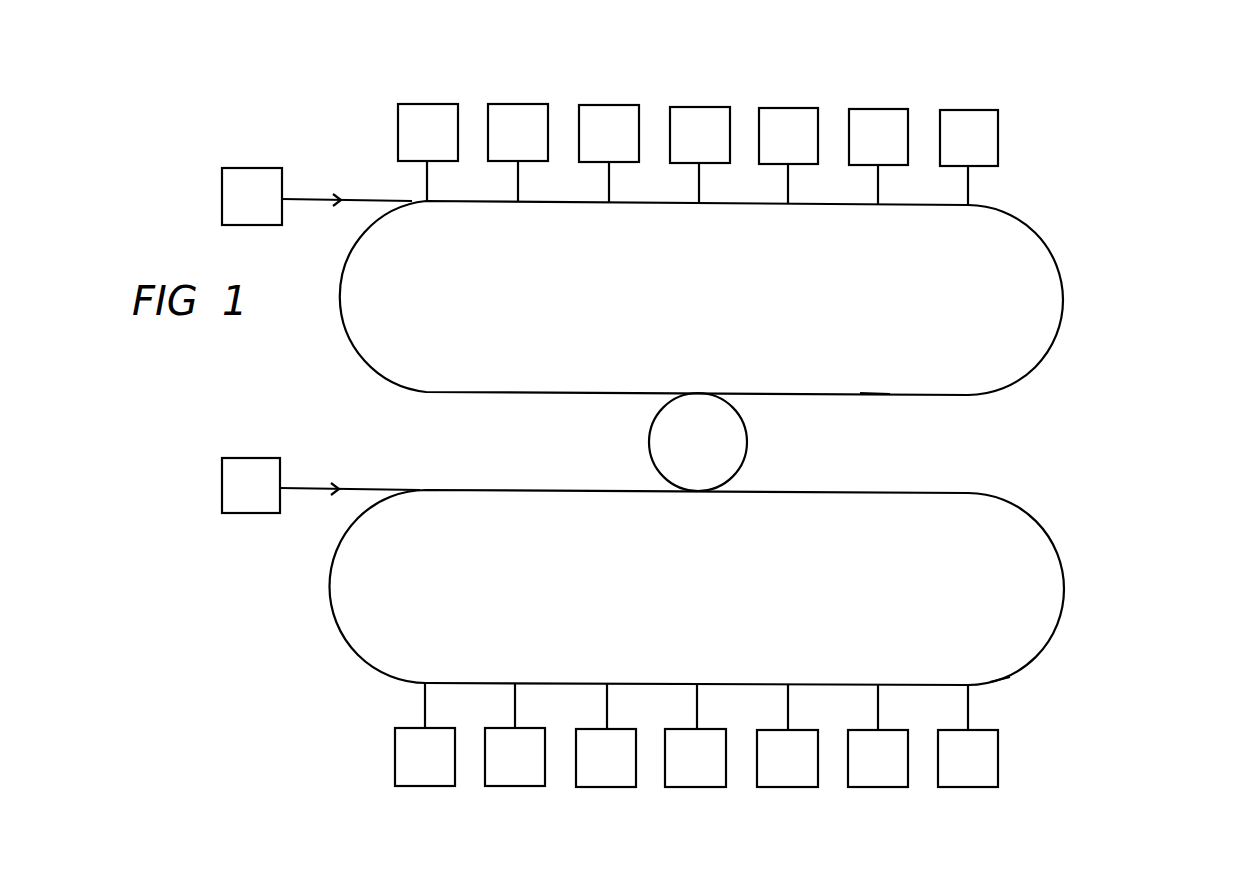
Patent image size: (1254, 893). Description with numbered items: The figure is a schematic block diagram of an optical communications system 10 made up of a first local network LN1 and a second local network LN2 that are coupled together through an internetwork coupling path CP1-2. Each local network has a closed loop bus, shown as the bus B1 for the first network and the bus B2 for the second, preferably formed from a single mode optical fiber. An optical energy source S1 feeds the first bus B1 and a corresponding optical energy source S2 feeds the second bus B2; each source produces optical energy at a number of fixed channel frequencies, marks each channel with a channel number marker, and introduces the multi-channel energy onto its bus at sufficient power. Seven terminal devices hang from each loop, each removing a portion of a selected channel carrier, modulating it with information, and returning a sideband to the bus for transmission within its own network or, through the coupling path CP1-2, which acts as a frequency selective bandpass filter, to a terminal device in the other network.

The optical communications system 10 is at (1175, 413).
The first local network LN1 is at (1073, 318).
The second local network LN2 is at (1072, 583).
The internetwork coupling path CP1-2 is at (749, 429).
The closed loop bus B1 is at (873, 392).
The closed loop bus B2 is at (1005, 679).
The optical energy source S1 is at (317, 196).
The optical energy source S2 is at (321, 485).